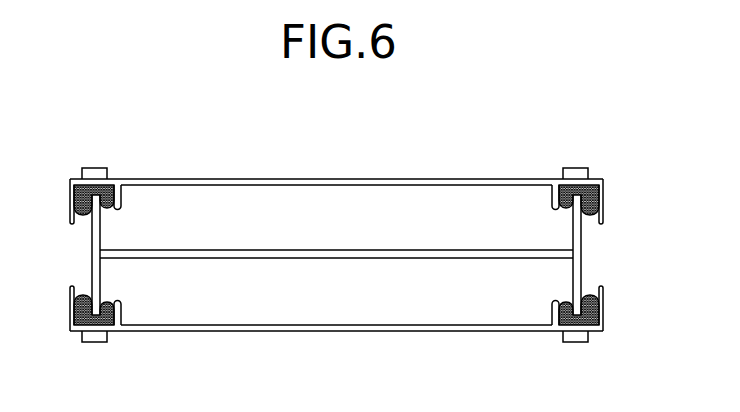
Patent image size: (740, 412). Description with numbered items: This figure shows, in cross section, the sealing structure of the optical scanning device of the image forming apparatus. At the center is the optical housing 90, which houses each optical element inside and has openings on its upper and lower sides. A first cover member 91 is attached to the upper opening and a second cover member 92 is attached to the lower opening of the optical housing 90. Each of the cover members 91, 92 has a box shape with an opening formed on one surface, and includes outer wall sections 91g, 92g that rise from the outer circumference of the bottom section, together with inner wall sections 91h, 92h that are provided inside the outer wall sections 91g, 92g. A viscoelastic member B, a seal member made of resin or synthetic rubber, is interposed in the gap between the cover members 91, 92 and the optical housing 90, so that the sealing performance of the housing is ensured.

The optical housing 90 is at (360, 258).
The first cover member 91 is at (335, 183).
The outer wall section 91g is at (72, 222).
The inner wall section 91h is at (122, 207).
The second cover member 92 is at (338, 326).
The outer wall section 92g is at (72, 304).
The inner wall section 92h is at (122, 309).
The viscoelastic member B is at (108, 186).